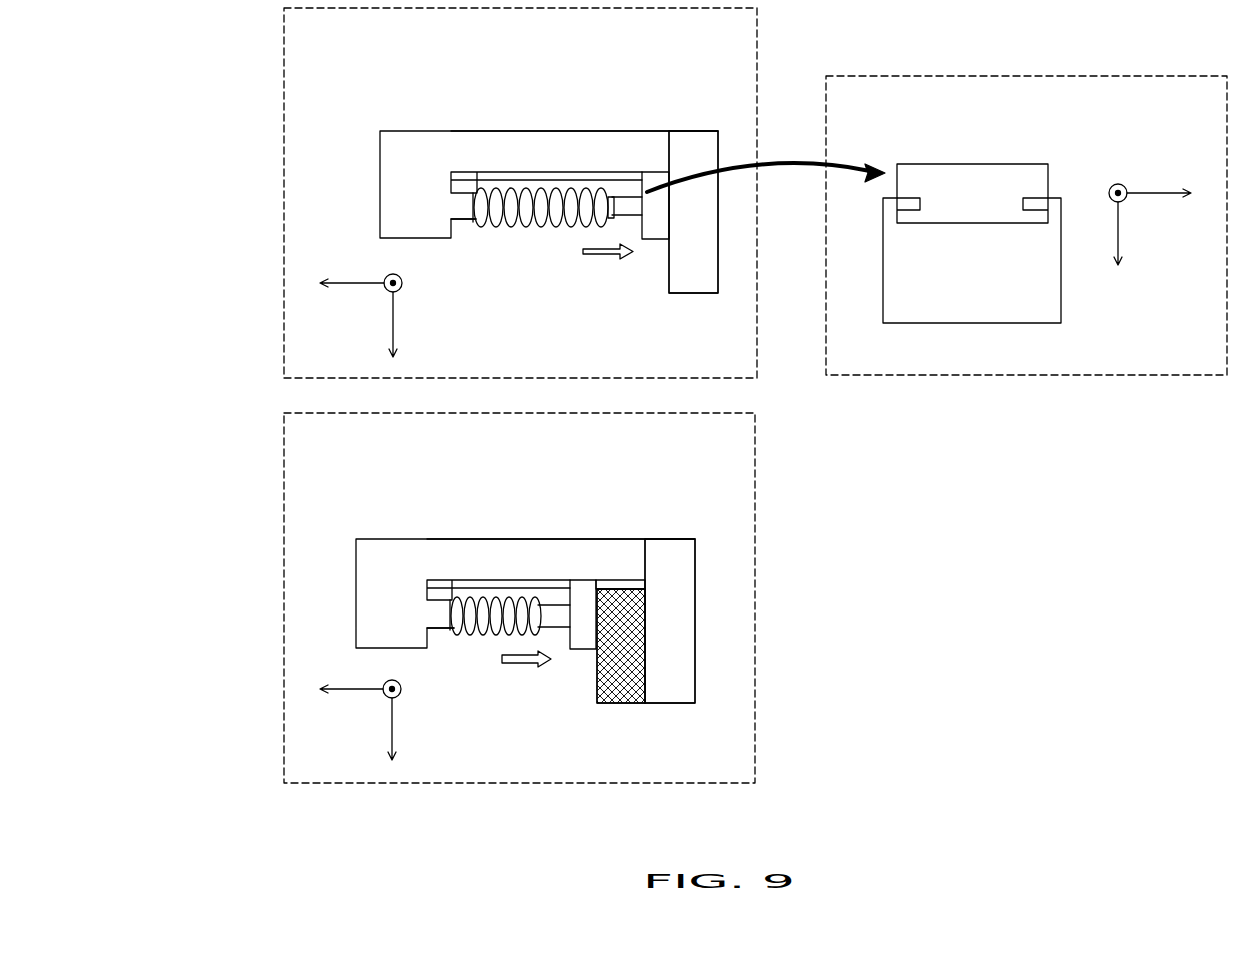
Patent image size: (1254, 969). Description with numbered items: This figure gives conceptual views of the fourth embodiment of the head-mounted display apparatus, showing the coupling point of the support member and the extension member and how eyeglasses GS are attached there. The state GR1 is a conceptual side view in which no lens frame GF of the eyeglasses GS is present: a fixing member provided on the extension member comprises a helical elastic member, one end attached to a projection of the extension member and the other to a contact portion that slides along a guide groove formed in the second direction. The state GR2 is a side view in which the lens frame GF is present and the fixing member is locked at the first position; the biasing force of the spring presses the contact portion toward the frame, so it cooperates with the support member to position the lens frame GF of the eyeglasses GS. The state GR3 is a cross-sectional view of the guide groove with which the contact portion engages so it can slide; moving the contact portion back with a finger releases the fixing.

The state GR1 is at (283, 197).
The state GR2 is at (283, 545).
The state GR3 is at (948, 74).
The lens frame GF is at (615, 691).
The eyeglasses GS is at (611, 681).